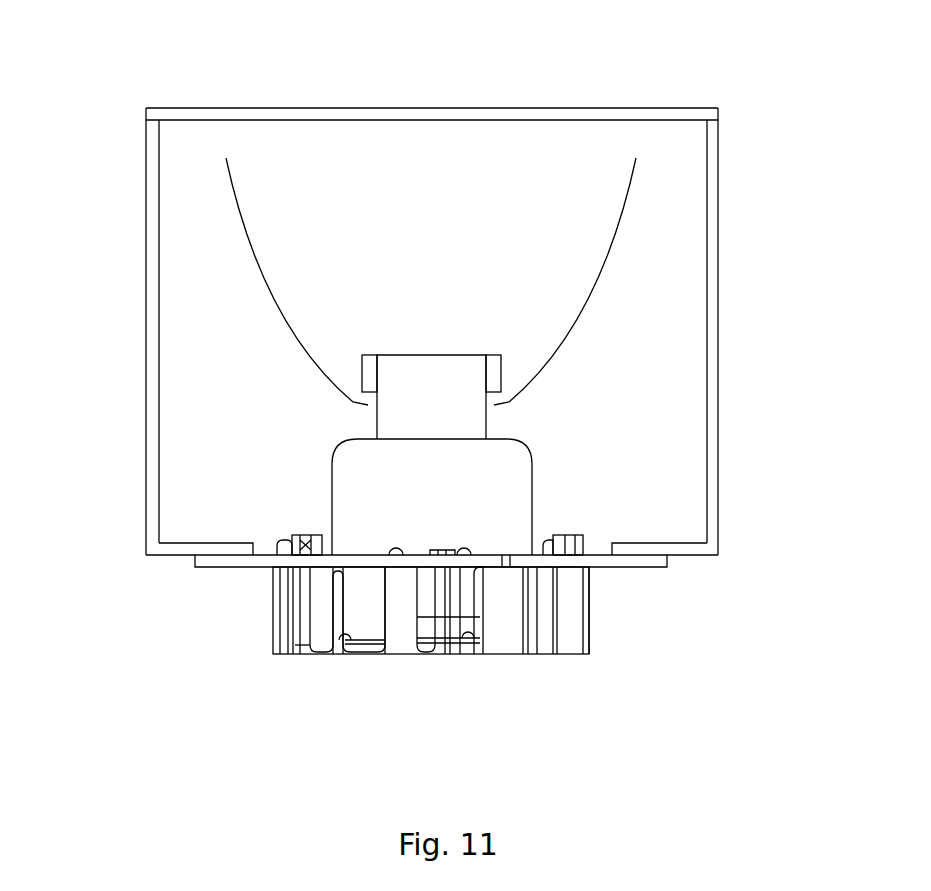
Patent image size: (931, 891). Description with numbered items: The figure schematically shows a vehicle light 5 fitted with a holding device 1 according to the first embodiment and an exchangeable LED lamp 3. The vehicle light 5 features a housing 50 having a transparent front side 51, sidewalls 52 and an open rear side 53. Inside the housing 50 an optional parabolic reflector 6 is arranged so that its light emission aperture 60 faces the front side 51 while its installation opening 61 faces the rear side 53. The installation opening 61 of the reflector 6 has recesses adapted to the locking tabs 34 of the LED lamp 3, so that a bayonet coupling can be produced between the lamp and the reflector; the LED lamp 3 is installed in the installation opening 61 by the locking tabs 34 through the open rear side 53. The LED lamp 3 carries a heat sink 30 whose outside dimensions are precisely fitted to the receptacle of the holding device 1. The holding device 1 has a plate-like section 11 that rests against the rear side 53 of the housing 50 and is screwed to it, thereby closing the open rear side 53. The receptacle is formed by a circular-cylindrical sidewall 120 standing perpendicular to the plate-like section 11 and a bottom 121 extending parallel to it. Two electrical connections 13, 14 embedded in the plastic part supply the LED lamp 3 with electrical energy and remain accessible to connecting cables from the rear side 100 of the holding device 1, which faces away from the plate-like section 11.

The holding device 1 is at (306, 656).
The LED lamp 3 is at (432, 336).
The vehicle light 5 is at (648, 93).
The parabolic reflector 6 is at (603, 264).
The plate-like section 11 is at (226, 567).
The electrical connection 13 is at (303, 535).
The electrical connection 14 is at (567, 535).
The heat sink 30 is at (355, 475).
The locking tabs 34 is at (501, 373).
The housing 50 is at (723, 482).
The transparent front side 51 is at (355, 115).
The sidewalls 52 is at (152, 176).
The open rear side 53 is at (170, 555).
The light emission aperture 60 is at (547, 208).
The installation opening 61 is at (492, 408).
The rear side 100 is at (573, 654).
The circular-cylindrical sidewall 120 is at (578, 619).
The bottom 121 is at (448, 654).